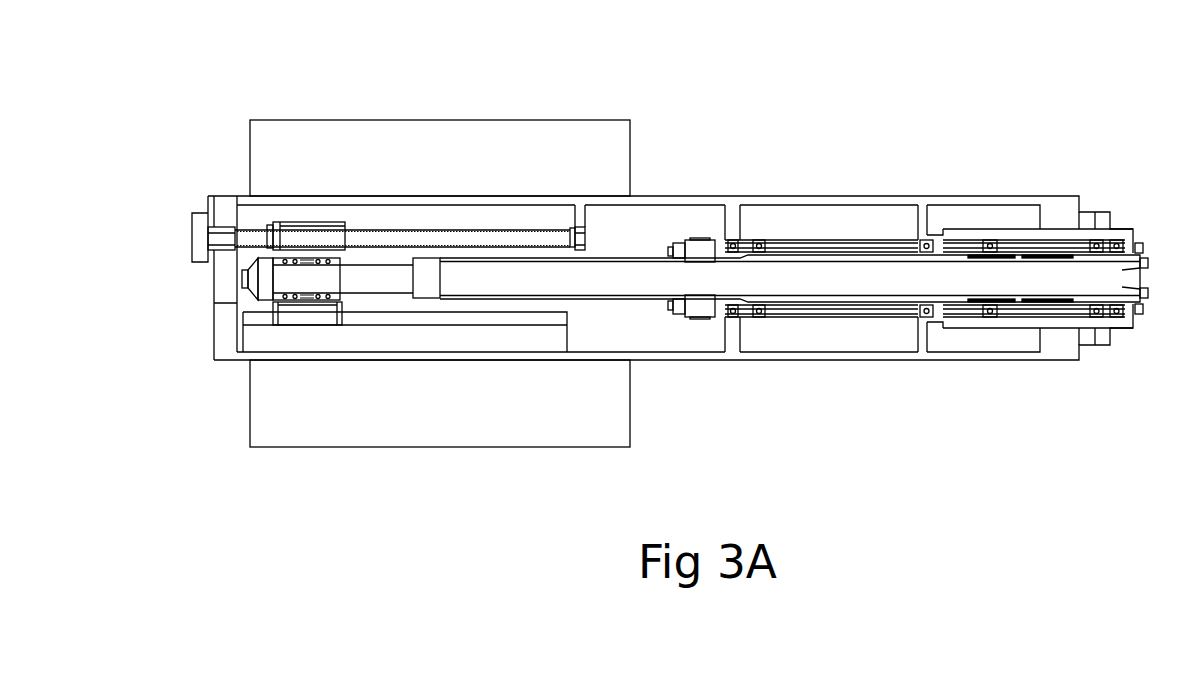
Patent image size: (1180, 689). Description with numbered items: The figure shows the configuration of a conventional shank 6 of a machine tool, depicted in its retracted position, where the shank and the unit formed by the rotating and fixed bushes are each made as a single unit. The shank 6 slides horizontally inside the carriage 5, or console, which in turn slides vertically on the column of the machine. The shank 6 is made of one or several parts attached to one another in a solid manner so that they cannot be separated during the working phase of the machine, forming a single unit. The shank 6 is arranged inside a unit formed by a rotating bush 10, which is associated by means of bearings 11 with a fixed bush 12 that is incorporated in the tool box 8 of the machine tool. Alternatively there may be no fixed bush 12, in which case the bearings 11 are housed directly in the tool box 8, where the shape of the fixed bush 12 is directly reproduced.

The carriage 5 is at (448, 155).
The shank 6 is at (797, 277).
The tool box 8 is at (1048, 345).
The rotating bush 10 is at (899, 252).
The bearings 11 is at (925, 318).
The fixed bush 12 is at (1017, 233).